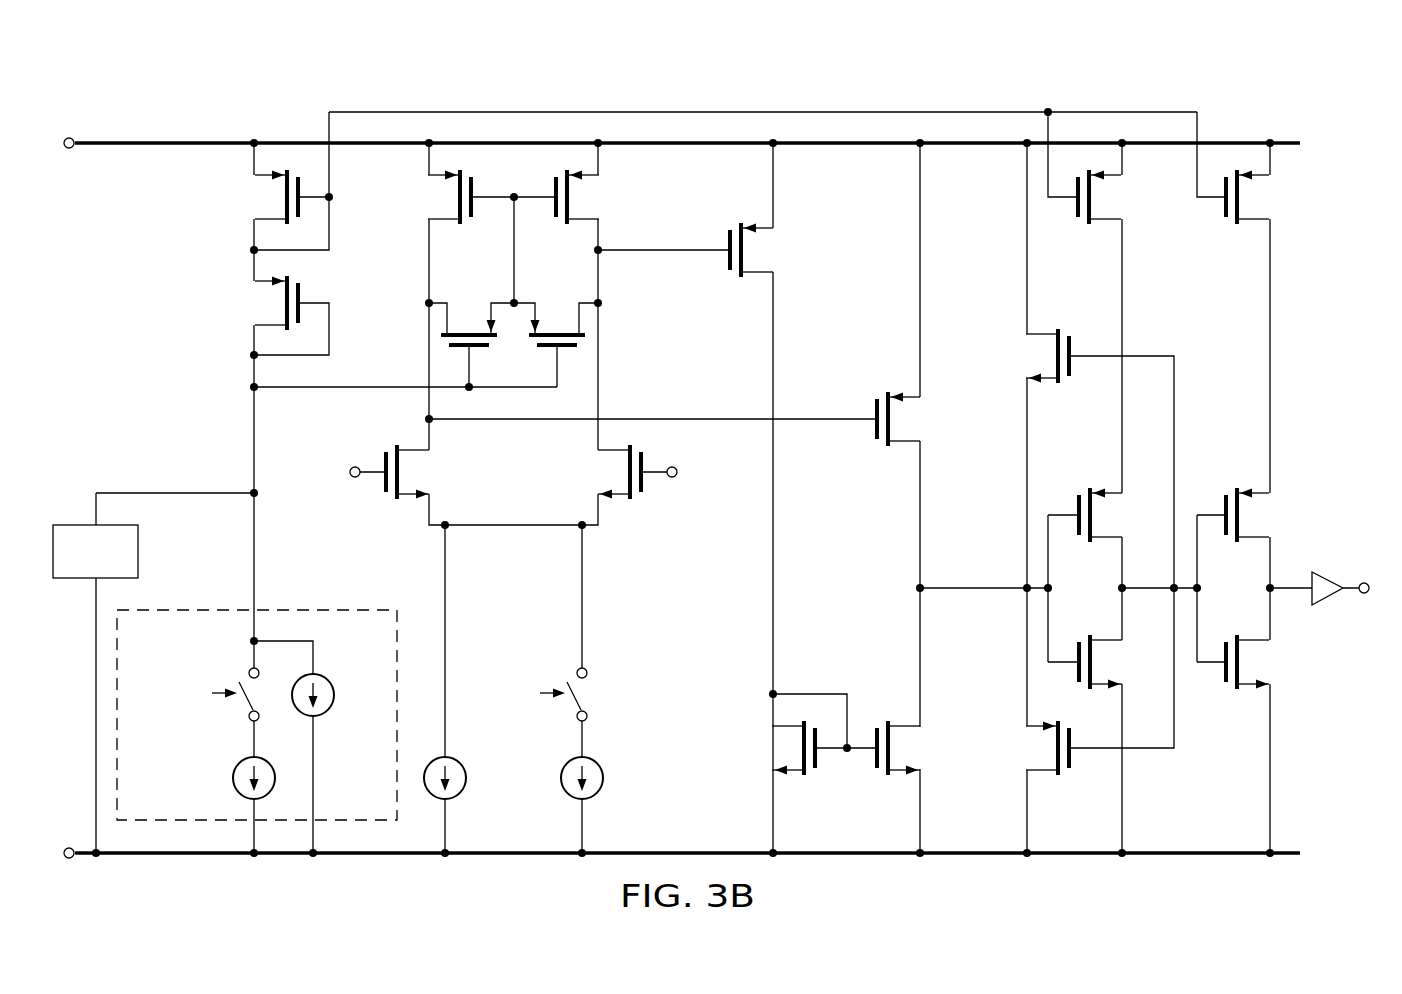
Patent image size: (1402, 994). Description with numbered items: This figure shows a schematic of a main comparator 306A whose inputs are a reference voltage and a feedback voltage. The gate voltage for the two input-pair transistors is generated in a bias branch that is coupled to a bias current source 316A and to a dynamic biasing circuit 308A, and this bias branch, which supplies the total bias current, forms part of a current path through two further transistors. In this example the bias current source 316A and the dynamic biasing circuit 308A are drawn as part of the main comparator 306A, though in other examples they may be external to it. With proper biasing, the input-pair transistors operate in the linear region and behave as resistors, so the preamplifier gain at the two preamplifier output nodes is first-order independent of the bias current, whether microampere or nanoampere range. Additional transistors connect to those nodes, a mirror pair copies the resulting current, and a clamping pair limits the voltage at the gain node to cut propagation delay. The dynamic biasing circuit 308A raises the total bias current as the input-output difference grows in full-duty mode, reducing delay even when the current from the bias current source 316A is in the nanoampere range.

The main comparator 306A is at (218, 100).
The dynamic biasing circuit 308A is at (95, 551).
The bias current source 316A is at (217, 604).